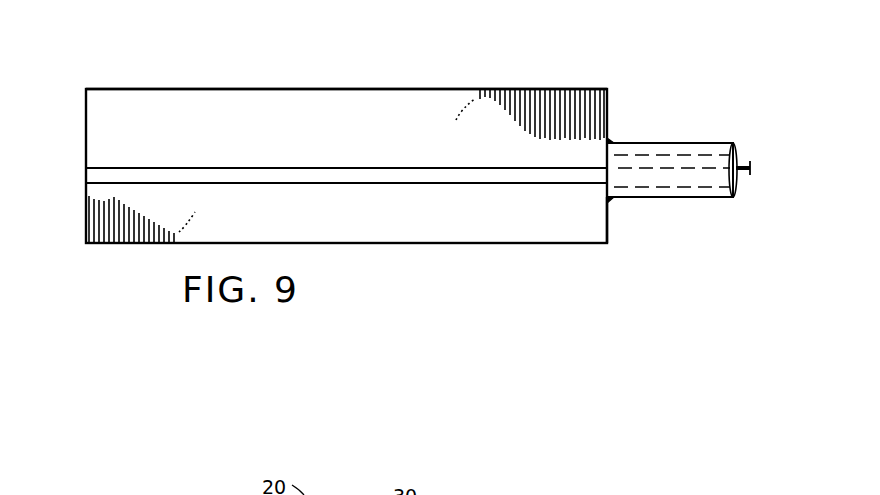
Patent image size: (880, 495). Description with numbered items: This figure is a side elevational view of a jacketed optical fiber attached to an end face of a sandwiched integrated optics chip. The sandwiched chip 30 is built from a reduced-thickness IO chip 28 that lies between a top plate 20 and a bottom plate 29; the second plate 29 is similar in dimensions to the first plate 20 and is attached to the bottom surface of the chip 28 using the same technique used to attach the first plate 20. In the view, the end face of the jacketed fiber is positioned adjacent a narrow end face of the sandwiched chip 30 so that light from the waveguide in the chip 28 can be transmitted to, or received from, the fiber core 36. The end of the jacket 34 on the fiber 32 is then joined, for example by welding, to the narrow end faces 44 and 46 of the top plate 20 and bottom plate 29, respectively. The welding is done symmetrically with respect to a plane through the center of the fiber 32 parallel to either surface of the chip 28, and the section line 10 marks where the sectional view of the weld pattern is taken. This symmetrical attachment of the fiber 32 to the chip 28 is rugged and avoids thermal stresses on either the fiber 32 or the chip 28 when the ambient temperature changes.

The section line 10- 10 is at (653, 43).
The first plate 20 is at (285, 117).
The reduced-thickness IO chip 28 is at (95, 175).
The second plate 29 is at (113, 222).
The sandwiched chip 30 is at (393, 96).
The fiber 32 is at (679, 197).
The jacket 34 is at (672, 143).
The fiber core 36 is at (749, 176).
The narrow end face of top plate 44 is at (608, 112).
The narrow end face of bottom plate 46 is at (610, 228).